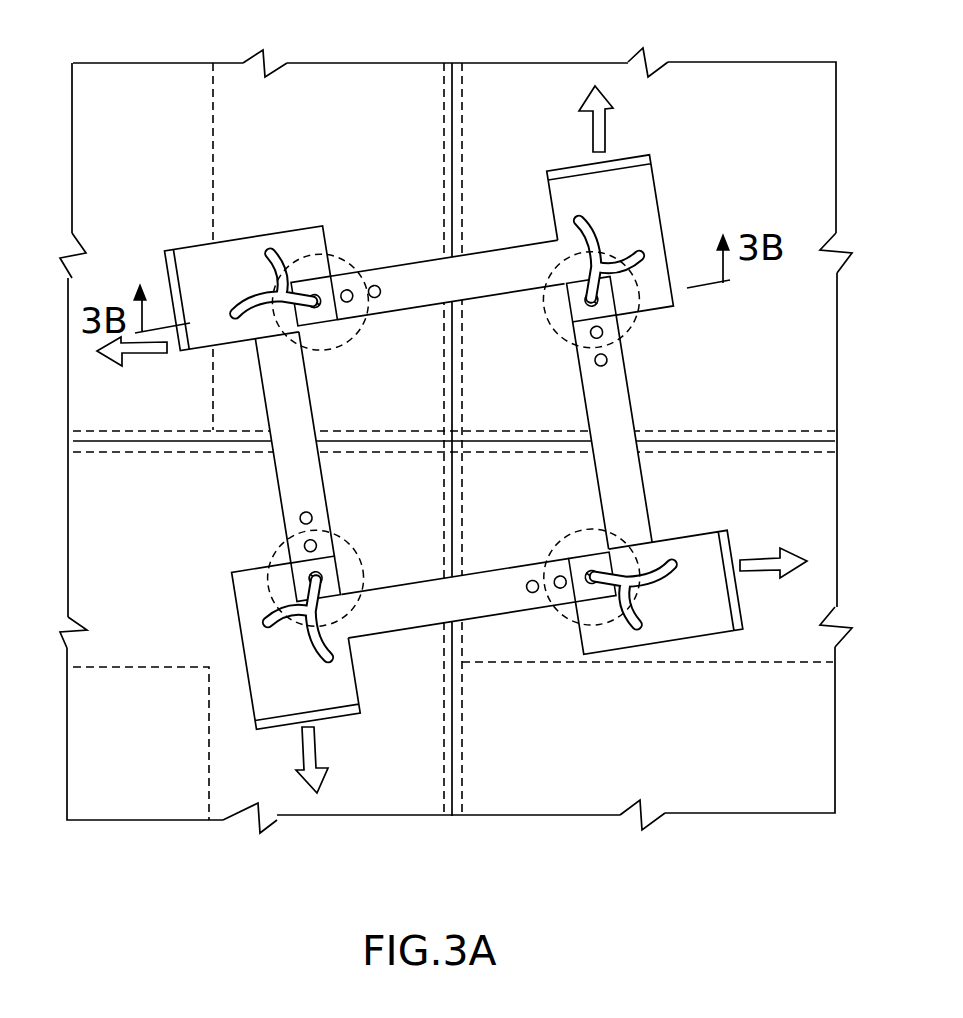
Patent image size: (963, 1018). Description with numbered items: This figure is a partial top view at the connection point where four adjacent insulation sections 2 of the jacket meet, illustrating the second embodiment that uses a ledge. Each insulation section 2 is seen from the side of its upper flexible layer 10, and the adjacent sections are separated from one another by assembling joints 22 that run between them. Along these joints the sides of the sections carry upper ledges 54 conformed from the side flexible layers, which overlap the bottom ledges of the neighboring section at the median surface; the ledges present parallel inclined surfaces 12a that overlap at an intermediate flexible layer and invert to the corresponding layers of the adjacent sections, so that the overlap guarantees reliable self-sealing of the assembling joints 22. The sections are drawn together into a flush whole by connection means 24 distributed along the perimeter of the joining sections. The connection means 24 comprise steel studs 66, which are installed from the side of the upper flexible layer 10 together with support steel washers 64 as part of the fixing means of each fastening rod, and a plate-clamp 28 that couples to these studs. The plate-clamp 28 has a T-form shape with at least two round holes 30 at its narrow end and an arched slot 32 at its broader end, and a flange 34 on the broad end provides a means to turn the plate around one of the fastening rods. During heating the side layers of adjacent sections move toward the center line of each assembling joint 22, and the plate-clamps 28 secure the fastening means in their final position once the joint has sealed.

The insulation section 2 is at (298, 80).
The upper flexible layer 10 is at (100, 82).
The inclined surface 12a is at (447, 385).
The assembling joint 22 is at (723, 441).
The connection means 24 is at (475, 275).
The plate-clamp 28 is at (418, 283).
The round hole 30 is at (312, 522).
The arched slot 32 is at (257, 282).
The flange 34 is at (637, 153).
The upper ledge 54 is at (207, 373).
The support steel washer 64 is at (342, 258).
The steel stud 66 is at (308, 310).